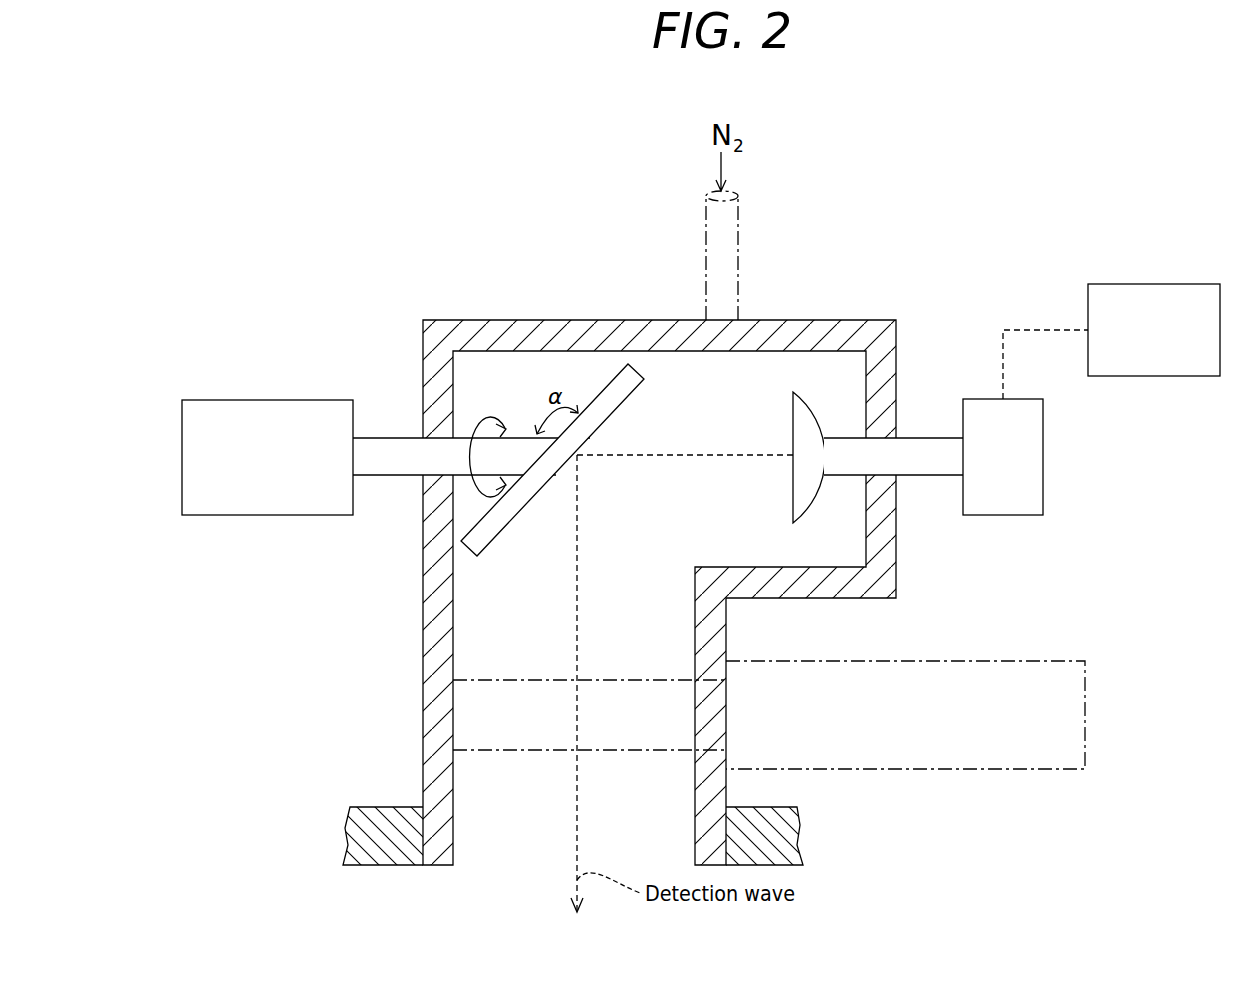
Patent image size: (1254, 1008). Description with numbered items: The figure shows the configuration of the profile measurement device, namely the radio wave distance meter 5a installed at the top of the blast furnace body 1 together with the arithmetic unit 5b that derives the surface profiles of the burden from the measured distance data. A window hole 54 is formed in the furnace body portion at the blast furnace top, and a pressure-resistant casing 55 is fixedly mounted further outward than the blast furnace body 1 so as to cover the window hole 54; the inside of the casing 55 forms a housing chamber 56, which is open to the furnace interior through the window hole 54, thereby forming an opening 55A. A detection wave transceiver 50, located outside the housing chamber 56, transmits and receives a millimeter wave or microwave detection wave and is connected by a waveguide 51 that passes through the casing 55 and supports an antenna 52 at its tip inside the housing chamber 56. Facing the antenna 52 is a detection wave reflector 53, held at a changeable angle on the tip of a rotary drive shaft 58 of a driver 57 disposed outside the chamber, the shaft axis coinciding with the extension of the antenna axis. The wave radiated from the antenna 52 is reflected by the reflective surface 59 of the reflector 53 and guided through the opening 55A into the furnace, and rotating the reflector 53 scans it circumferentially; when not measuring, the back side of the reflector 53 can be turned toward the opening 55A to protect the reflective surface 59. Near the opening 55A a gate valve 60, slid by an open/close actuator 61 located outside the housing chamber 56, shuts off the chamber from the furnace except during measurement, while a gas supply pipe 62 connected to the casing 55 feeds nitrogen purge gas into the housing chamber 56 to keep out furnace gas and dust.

The blast furnace body 1 is at (350, 832).
The radio wave distance meter 5a is at (918, 176).
The arithmetic unit 5b is at (1165, 284).
The detection wave transceiver 50 is at (1043, 468).
The waveguide 51 is at (919, 438).
The antenna 52 is at (811, 412).
The detection wave reflector 53 is at (624, 402).
The window hole 54 is at (453, 818).
The casing 55 is at (491, 320).
The opening 55A is at (535, 856).
The housing chamber 56 is at (659, 532).
The driver 57 is at (259, 400).
The rotary drive shaft 58 is at (385, 438).
The reflective surface 59 is at (505, 546).
The gate valve 60 is at (532, 700).
The open/close actuator 61 is at (962, 661).
The gas supply pipe 62 is at (740, 225).